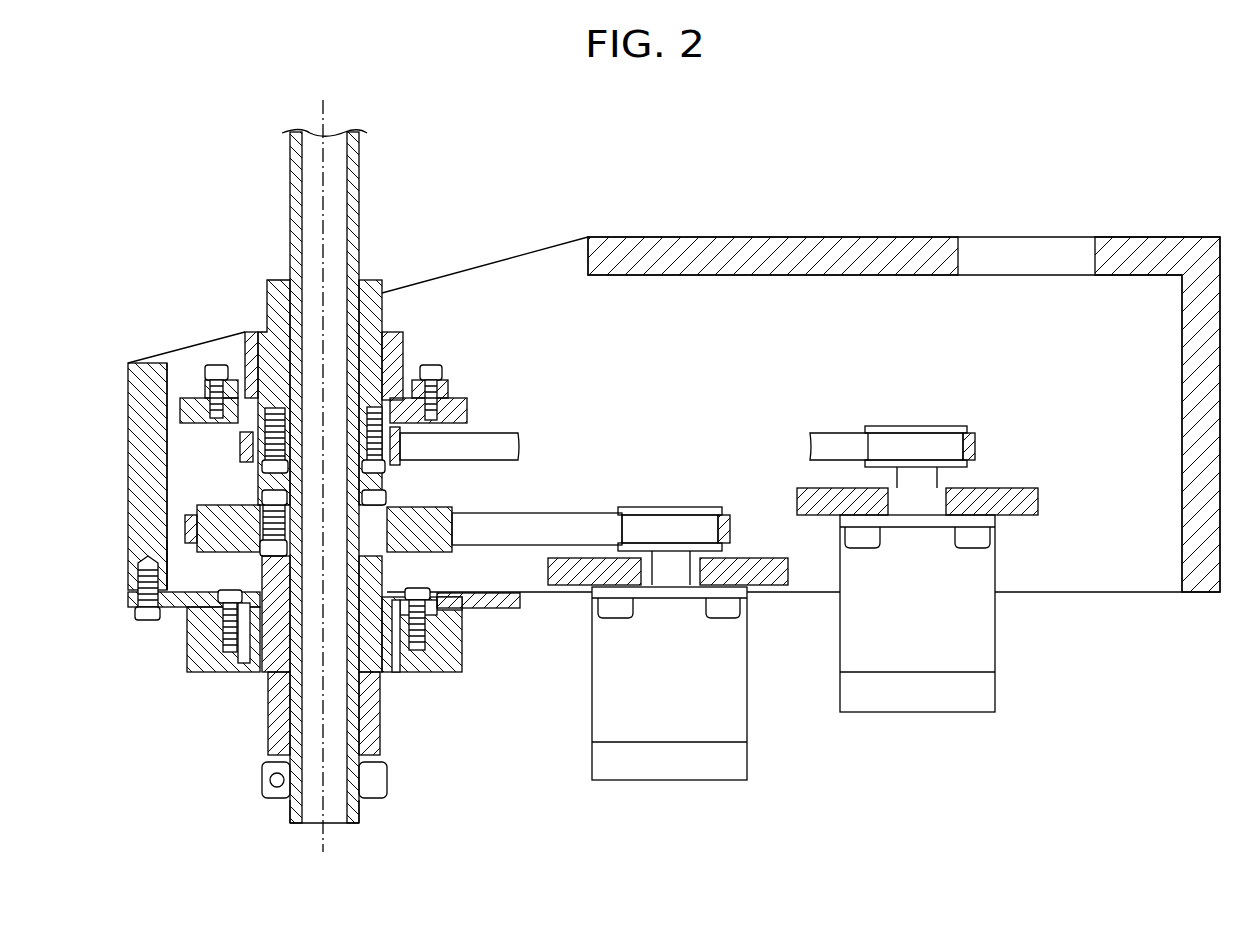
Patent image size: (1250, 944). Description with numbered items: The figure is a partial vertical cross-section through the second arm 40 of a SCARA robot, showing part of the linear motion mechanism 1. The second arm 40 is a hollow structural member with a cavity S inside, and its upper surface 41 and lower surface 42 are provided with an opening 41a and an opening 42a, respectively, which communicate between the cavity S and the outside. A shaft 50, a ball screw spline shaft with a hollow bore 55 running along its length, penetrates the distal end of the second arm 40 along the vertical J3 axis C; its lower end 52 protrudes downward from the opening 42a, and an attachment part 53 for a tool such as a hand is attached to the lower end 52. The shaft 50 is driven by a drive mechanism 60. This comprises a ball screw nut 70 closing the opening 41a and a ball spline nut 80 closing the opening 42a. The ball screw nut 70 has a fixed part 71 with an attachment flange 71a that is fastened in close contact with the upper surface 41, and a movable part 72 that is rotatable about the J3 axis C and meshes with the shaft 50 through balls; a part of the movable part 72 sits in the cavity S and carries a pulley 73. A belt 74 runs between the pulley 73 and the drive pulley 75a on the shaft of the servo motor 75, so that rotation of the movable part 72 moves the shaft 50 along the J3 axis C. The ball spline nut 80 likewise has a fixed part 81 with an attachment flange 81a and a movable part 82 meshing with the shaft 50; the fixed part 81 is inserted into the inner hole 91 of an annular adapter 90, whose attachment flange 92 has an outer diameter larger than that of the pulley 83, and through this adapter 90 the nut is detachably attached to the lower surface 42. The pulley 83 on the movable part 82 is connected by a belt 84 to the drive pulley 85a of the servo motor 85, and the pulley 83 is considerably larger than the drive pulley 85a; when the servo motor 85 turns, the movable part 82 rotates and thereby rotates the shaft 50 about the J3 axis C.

The linear motion mechanism 1 is at (158, 290).
The second arm 40 is at (715, 237).
The upper surface 41 is at (195, 390).
The opening 41a is at (240, 428).
The lower surface 42 is at (132, 600).
The opening 42a is at (168, 573).
The shaft 50 is at (285, 217).
The lower end 52 is at (265, 829).
The attachment part 53 is at (373, 800).
The hollow bore 55 is at (306, 137).
The drive mechanism 60 is at (640, 395).
The ball screw nut 70 is at (480, 205).
The fixed part 71 is at (403, 332).
The attachment flange 71a is at (407, 400).
The movable part 72 is at (382, 292).
The pulley 73 is at (253, 466).
The belt 74 is at (496, 430).
The servo motor 75 is at (1005, 663).
The drive pulley 75a is at (912, 426).
The ball spline nut 80 is at (487, 702).
The fixed part 81 is at (397, 675).
The attachment flange 81a is at (458, 618).
The movable part 82 is at (380, 742).
The pulley 83 is at (410, 508).
The belt 84 is at (586, 513).
The servo motor 85 is at (762, 733).
The drive pulley 85a is at (676, 507).
The adapter 90 is at (186, 650).
The inner hole 91 is at (262, 675).
The attachment flange 92 is at (525, 603).
The J3 axis C is at (327, 460).
The cavity S is at (170, 512).